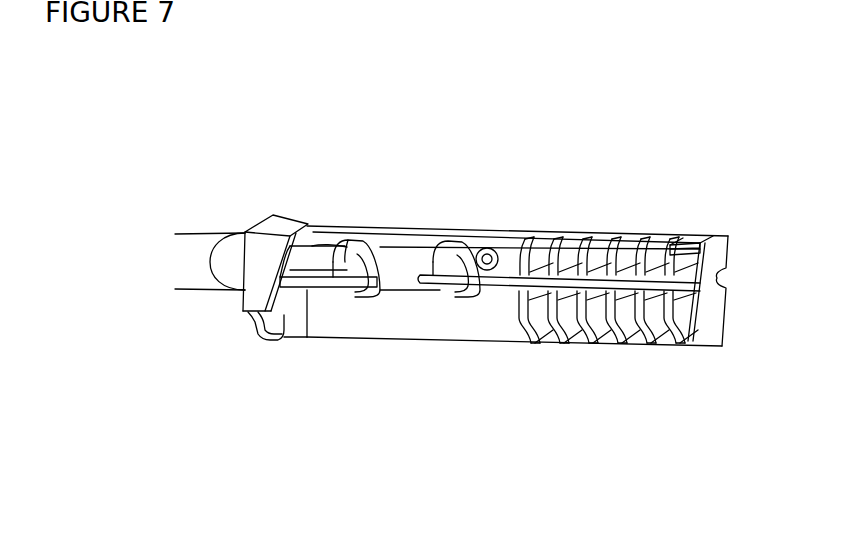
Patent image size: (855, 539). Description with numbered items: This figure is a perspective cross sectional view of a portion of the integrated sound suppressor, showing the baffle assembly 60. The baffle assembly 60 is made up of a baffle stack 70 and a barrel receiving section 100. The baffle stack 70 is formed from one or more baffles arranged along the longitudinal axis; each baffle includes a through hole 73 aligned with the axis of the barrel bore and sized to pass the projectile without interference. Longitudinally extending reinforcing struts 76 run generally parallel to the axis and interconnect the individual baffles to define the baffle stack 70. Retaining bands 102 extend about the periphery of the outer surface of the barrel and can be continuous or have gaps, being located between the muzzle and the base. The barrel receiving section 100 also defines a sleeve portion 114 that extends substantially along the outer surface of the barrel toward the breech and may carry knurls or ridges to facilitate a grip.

The baffle assembly 60 is at (474, 334).
The baffle stack 70 is at (641, 342).
The through hole 73 is at (730, 291).
The reinforcing strut 76 is at (485, 238).
The barrel receiving section 100 is at (445, 302).
The retaining band 102 is at (348, 250).
The sleeve portion 114 is at (182, 245).